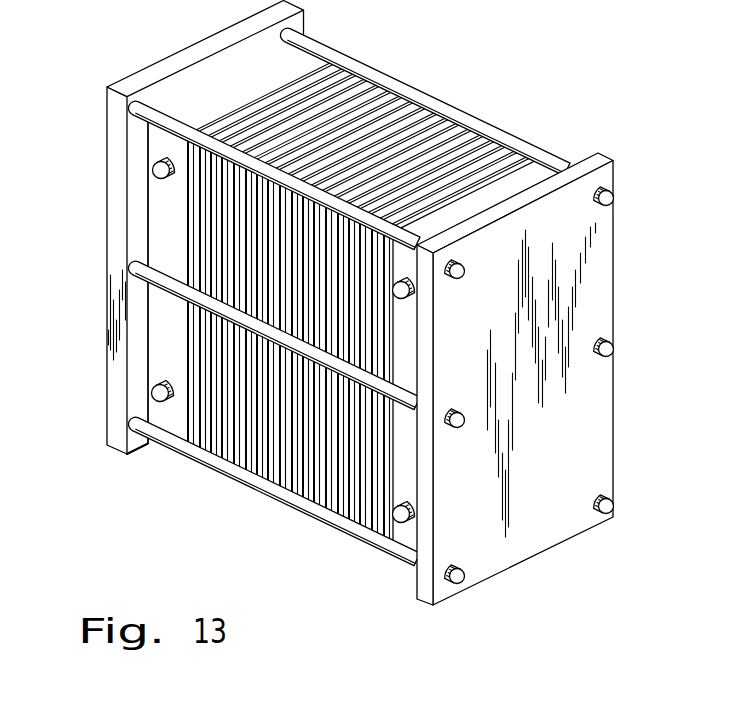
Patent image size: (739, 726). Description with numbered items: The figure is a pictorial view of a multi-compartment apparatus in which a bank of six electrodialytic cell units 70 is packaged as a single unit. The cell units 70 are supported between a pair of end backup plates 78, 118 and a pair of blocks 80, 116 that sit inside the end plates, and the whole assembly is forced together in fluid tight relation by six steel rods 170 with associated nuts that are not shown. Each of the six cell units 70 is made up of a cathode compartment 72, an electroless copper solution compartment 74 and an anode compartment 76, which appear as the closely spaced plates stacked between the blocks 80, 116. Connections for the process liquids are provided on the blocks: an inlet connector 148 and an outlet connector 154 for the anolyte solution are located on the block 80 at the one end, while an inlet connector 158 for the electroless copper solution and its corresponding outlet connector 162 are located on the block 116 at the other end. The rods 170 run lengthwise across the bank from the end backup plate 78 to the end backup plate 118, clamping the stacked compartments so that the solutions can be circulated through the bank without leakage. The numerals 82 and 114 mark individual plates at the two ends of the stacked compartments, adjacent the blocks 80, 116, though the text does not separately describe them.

The electrodialytic cell unit 70 is at (305, 488).
The cathode compartment 72 is at (195, 322).
The electroless copper solution compartment 74 is at (206, 341).
The anode compartment 76 is at (216, 359).
The end backup plate 78 is at (113, 389).
The block 80 is at (121, 283).
The first plate 82 is at (190, 253).
The last plate 114 is at (222, 435).
The block 116 is at (468, 353).
The end backup plate 118 is at (597, 432).
The inlet connector for the anolyte solution 148 is at (151, 400).
The outlet connector for the anolyte solution 154 is at (151, 167).
The inlet connector for the electroless copper solution 158 is at (409, 512).
The outlet connector for the electroless copper solution 162 is at (411, 294).
The steel rod 170 is at (420, 97).